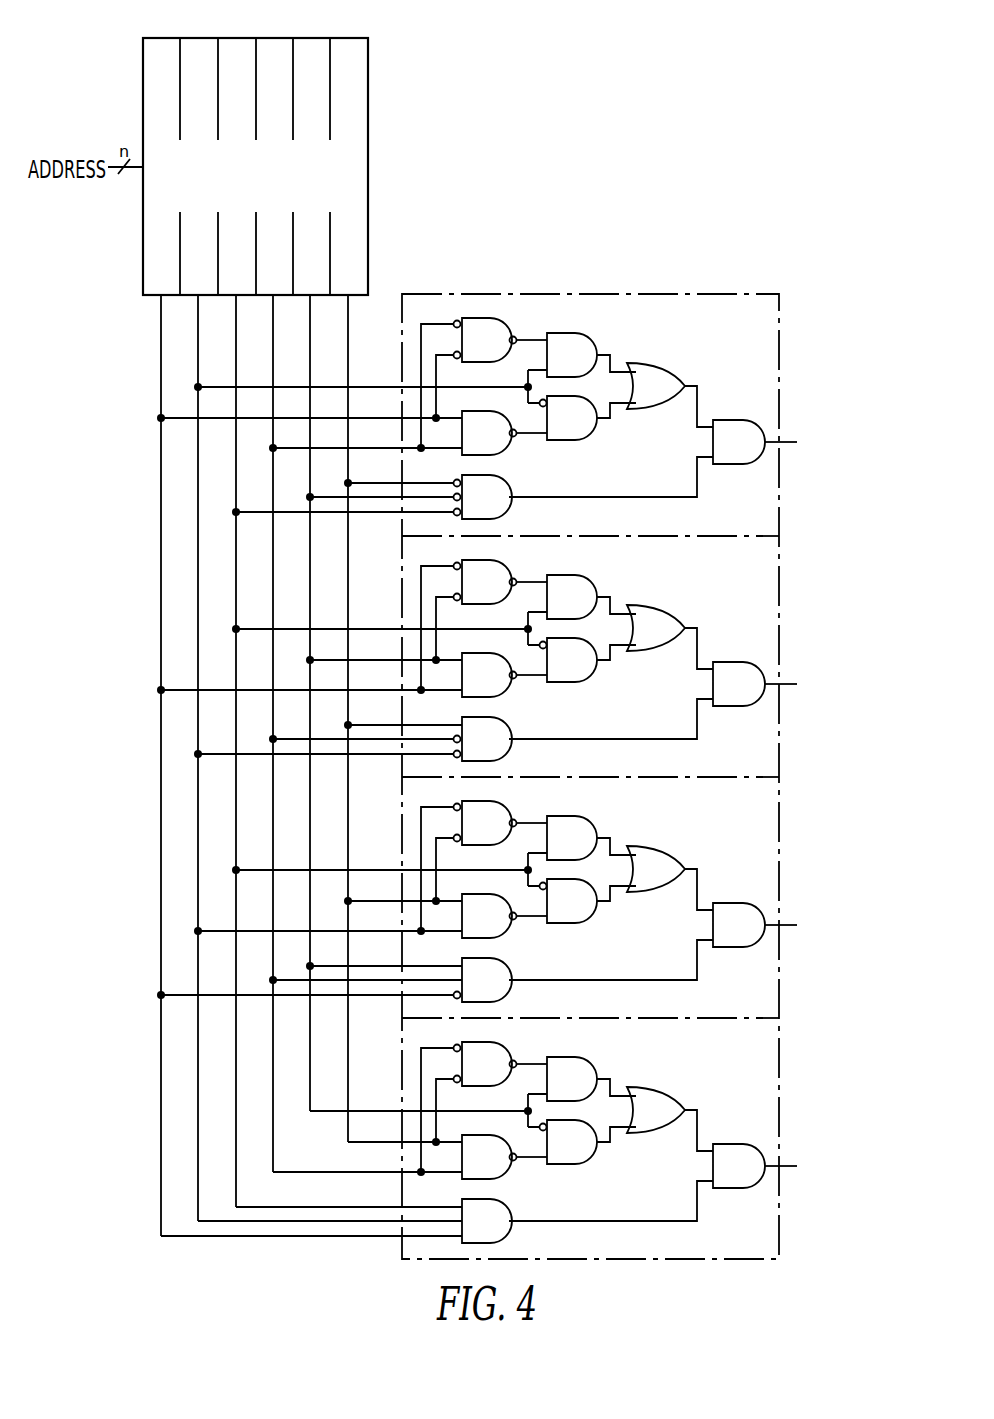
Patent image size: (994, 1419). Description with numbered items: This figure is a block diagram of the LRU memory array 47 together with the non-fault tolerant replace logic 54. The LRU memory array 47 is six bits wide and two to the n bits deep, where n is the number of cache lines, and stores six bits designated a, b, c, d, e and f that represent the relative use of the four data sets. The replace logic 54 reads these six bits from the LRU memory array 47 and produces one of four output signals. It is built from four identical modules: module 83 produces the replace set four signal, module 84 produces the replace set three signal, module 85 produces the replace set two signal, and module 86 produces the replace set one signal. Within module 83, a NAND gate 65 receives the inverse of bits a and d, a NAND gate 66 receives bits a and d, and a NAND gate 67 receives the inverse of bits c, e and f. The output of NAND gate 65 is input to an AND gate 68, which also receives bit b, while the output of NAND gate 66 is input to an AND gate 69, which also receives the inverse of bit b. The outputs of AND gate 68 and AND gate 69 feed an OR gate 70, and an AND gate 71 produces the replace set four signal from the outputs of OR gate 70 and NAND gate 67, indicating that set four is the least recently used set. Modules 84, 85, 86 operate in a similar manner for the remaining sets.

The LRU memory array 47 is at (368, 54).
The replace logic 54 is at (684, 294).
The NAND gate 65 is at (494, 319).
The NAND gate 66 is at (506, 452).
The NAND gate 67 is at (506, 514).
The AND gate 68 is at (585, 333).
The AND gate 69 is at (594, 436).
The OR gate 70 is at (665, 364).
The AND gate 71 is at (734, 466).
The module 83 is at (515, 416).
The module 84 is at (779, 597).
The module 85 is at (779, 838).
The module 86 is at (779, 1080).